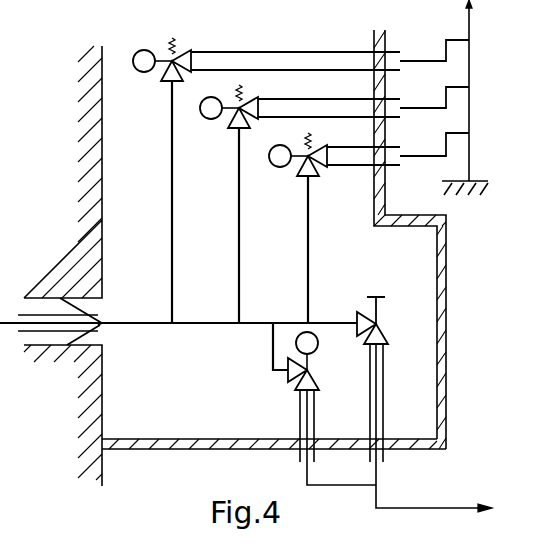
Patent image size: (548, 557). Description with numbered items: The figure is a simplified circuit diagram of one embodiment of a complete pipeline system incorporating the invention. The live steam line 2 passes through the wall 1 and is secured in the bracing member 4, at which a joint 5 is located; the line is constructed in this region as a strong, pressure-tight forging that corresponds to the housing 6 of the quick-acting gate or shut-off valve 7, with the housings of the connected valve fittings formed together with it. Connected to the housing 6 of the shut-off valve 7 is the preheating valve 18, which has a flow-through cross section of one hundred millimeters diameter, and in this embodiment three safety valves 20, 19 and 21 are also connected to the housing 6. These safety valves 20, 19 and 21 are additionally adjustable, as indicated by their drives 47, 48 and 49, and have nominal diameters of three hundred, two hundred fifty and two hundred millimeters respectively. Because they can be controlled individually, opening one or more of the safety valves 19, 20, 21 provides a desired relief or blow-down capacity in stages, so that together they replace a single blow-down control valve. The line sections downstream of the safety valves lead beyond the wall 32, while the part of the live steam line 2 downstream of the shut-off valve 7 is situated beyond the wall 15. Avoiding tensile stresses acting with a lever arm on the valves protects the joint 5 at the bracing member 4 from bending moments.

The wall 1 is at (86, 136).
The live steam line 2 is at (13, 326).
The bracing member 4 is at (87, 333).
The joint 5 is at (100, 323).
The housing 6 is at (197, 324).
The quick-acting gate or shut-off valve 7 is at (385, 333).
The wall 15 is at (400, 440).
The preheating valve 18 is at (318, 376).
The safety valve 19 is at (246, 104).
The safety valve 20 is at (178, 50).
The safety valve 21 is at (322, 151).
The wall 32 is at (386, 42).
The drive 47 is at (141, 73).
The drive 48 is at (210, 119).
The drive 49 is at (280, 167).